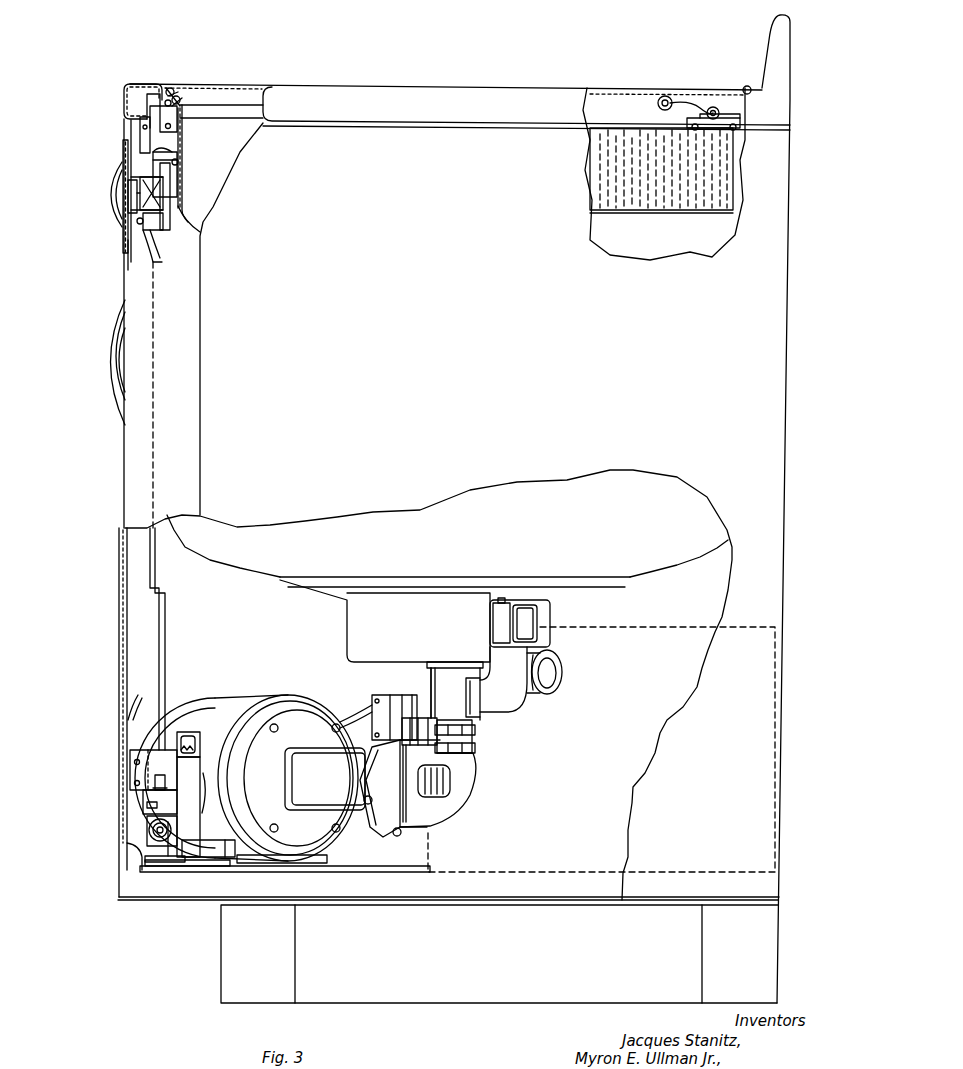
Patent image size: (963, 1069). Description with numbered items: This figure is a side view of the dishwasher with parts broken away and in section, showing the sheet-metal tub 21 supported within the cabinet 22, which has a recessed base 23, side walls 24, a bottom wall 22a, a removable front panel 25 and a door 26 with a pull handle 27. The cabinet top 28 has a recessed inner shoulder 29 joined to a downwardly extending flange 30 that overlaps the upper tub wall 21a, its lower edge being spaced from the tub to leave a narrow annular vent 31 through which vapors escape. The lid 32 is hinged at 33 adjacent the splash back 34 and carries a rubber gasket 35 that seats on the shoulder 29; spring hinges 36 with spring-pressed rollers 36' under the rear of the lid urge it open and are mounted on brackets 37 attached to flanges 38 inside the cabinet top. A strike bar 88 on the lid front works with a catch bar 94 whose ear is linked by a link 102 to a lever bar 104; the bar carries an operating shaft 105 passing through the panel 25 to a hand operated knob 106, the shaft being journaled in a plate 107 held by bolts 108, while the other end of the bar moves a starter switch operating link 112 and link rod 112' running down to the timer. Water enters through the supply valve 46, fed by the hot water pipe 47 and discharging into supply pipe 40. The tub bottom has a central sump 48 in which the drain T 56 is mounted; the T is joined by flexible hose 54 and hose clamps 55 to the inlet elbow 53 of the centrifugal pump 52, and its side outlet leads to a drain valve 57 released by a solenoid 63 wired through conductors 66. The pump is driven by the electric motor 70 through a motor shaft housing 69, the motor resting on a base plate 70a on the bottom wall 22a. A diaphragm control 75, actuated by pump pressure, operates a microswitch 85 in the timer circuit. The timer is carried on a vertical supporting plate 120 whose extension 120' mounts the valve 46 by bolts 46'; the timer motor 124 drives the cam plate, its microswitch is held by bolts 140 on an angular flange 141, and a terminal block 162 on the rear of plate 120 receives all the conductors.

The tub 21 is at (682, 562).
The tub wall 21a is at (165, 262).
The cabinet 22 is at (115, 491).
The bottom wall 22a is at (407, 902).
The recessed base 23 is at (228, 965).
The side walls 24 is at (334, 319).
The removable panel 25 is at (130, 257).
The door 26 is at (119, 625).
The pull handle 27 is at (112, 396).
The cabinet top 28 is at (138, 74).
The recessed inner shoulder 29 is at (177, 127).
The downwardly extending flange 30 is at (177, 161).
The annular vent 31 is at (200, 232).
The lid 32 is at (440, 86).
The hinge 33 is at (746, 86).
The splash back 34 is at (789, 38).
The rubber gasket 35 is at (178, 118).
The spring hinges 36 is at (694, 84).
The spring-pressed rollers 36' is at (652, 76).
The brackets 37 is at (735, 119).
The flanges 38 is at (603, 130).
The water supply pipe 40 is at (152, 830).
The supply valve 46 is at (127, 794).
The bolts 46' is at (116, 811).
The pipe 47 is at (220, 852).
The sump 48 is at (347, 622).
The centrifugal pump 52 is at (385, 806).
The pump inlet elbow 53 is at (467, 777).
The flexible hose 54 is at (475, 740).
The hose clamps 55 is at (475, 727).
The tub outlet drain T 56 is at (447, 680).
The drain valve 57 is at (525, 704).
The solenoid 63 is at (540, 626).
The electrical conductors 66 is at (490, 628).
The motor shaft housing 69 is at (325, 779).
The electric motor 70 is at (213, 697).
The base plate 70a is at (320, 875).
The diaphragm control 75 is at (424, 710).
The microswitch 85 is at (378, 697).
The strike bar 88 is at (174, 90).
The catch bar 94 is at (147, 106).
The link 102 is at (147, 160).
The lever bar 104 is at (163, 192).
The operating shaft 105 is at (128, 195).
The hand operated knob 106 is at (113, 173).
The plate 107 is at (170, 222).
The bolts 108 is at (178, 163).
The starter switch operating link 112 is at (119, 263).
The link rod 112' is at (118, 639).
The supporting plate 120 is at (198, 778).
The extension 120' is at (154, 872).
The timer motor 124 is at (195, 864).
The bolts 140 is at (135, 757).
The angular flange 141 is at (130, 772).
The terminal block 162 is at (194, 745).